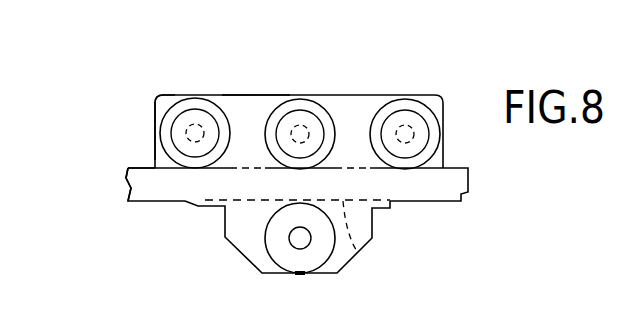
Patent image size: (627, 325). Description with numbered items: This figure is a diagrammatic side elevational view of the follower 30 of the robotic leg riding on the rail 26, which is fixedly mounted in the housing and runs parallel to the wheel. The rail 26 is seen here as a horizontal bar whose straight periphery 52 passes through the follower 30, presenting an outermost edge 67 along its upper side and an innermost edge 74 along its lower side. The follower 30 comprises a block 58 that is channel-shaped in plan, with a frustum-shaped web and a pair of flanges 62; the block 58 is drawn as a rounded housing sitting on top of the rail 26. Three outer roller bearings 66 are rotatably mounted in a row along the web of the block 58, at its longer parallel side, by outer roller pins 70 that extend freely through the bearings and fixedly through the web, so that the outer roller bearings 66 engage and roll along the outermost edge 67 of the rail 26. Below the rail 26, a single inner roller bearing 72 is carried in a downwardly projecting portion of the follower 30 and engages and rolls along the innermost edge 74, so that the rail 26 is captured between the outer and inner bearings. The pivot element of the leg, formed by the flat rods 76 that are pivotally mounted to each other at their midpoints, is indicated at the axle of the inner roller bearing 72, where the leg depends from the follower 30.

The rail 26 is at (402, 188).
The follower 30 is at (235, 88).
The straight periphery 52 is at (192, 178).
The block 58 is at (433, 100).
The flanges 62 is at (270, 100).
The outer roller bearings 66 is at (170, 112).
The outermost edge 67 is at (143, 167).
The outer roller pins 70 is at (194, 131).
The inner roller bearing 72 is at (270, 234).
The innermost edge 74 is at (355, 248).
The flat rods 76 is at (300, 247).